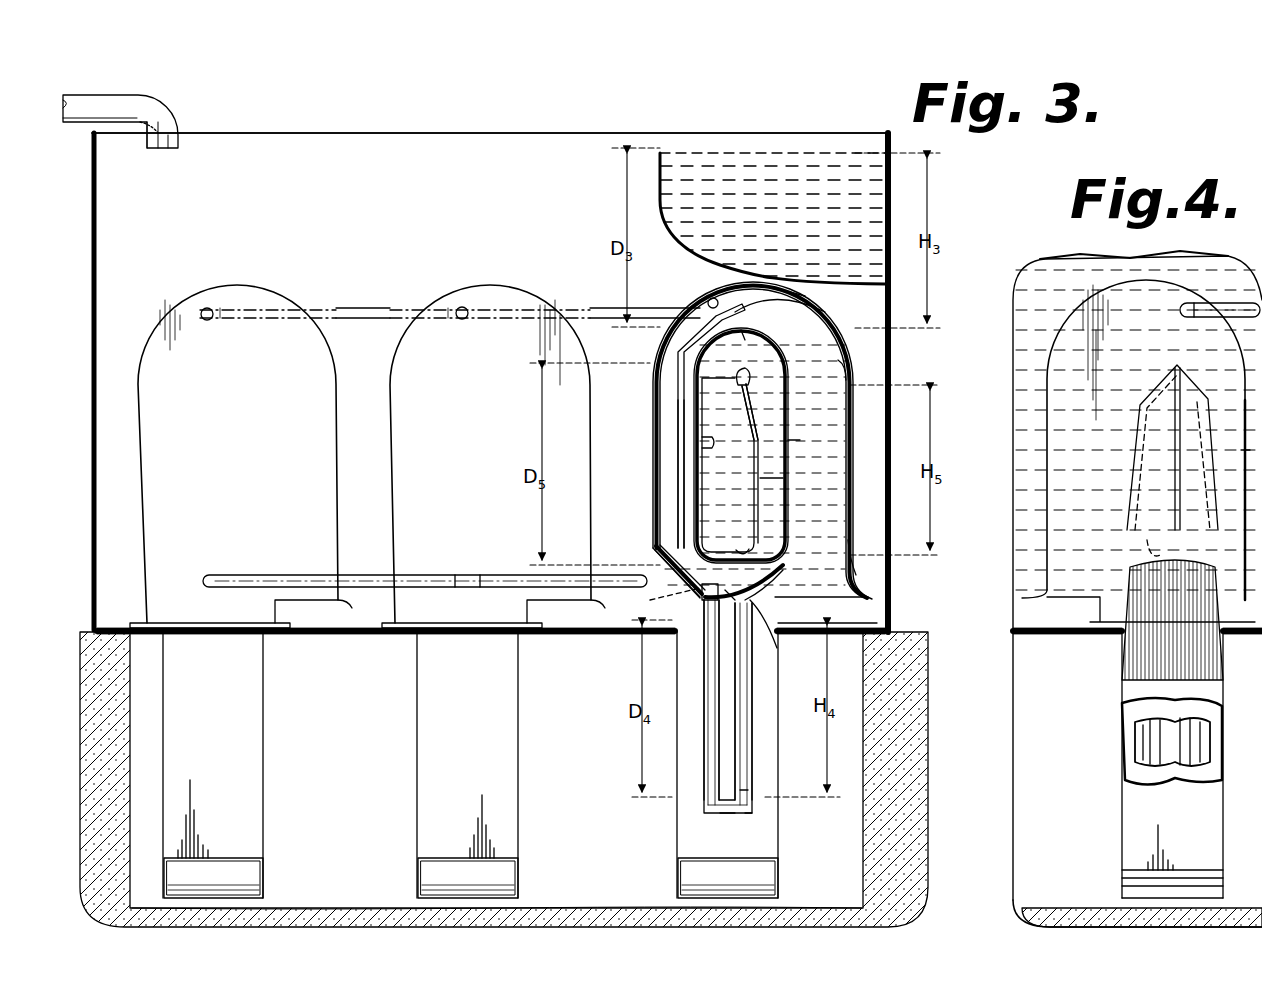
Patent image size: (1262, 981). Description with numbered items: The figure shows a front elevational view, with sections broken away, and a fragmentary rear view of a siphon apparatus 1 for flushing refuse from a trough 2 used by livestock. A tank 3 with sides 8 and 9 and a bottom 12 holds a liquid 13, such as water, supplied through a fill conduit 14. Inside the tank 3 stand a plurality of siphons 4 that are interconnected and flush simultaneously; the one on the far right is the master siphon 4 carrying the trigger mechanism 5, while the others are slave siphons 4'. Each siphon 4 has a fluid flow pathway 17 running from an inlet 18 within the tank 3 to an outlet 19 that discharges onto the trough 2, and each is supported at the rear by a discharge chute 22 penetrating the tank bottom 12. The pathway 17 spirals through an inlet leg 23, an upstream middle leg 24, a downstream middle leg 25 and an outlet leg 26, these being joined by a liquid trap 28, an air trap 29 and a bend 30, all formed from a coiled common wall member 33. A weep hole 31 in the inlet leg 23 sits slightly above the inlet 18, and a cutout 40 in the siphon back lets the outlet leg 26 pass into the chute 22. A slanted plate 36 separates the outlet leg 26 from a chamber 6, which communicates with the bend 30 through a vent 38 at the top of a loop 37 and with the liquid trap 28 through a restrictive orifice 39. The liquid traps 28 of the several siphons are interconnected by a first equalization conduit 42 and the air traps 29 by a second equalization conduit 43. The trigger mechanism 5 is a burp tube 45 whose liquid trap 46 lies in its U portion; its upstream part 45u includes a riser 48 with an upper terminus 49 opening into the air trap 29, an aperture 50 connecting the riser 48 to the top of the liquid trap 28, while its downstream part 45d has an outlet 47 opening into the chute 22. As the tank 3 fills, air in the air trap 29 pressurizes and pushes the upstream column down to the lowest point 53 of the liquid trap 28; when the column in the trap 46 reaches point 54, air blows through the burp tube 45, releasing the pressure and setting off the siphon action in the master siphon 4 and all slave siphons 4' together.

In FIG. 3, the siphon apparatus 1 is at (433, 128).
In FIG. 4, the siphon apparatus 1 is at (1240, 256).
In FIG. 3, the trough 2 is at (548, 908).
In FIG. 3, the tank 3 is at (338, 145).
In FIG. 4, the tank 3 is at (1018, 292).
In FIG. 4, the siphon 4 is at (1142, 441).
In FIG. 3, the slave siphon 4' is at (356, 454).
In FIG. 3, the trigger mechanism 5 is at (745, 790).
In FIG. 3, the chamber 6 is at (700, 440).
In FIG. 3, the side 8 is at (92, 283).
In FIG. 3, the side 9 is at (892, 365).
In FIG. 3, the bottom 12 is at (340, 633).
In FIG. 4, the bottom 12 is at (1137, 643).
In FIG. 3, the liquid 13 is at (838, 256).
In FIG. 4, the liquid 13 is at (1251, 450).
In FIG. 3, the fill conduit 14 is at (160, 112).
In FIG. 3, the fluid flow pathway 17 is at (780, 478).
In FIG. 3, the inlet 18 is at (325, 605).
In FIG. 4, the inlet 18 is at (1065, 625).
In FIG. 3, the outlet 19 is at (259, 878).
In FIG. 3, the discharge chute 22 is at (258, 665).
In FIG. 4, the discharge chute 22 is at (1124, 772).
In FIG. 3, the inlet leg 23 is at (835, 441).
In FIG. 3, the upstream middle leg 24 is at (665, 458).
In FIG. 3, the downstream middle leg 25 is at (783, 520).
In FIG. 3, the outlet leg 26 is at (684, 348).
In FIG. 3, the liquid trap 28 is at (775, 575).
In FIG. 3, the air trap 29 is at (713, 298).
In FIG. 3, the bend 30 is at (748, 340).
In FIG. 3, the weep hole 31 is at (853, 545).
In FIG. 3, the common wall member 33 is at (848, 374).
In FIG. 3, the slanted plate 36 is at (700, 380).
In FIG. 3, the loop 37 is at (738, 378).
In FIG. 3, the vent 38 is at (745, 370).
In FIG. 3, the restrictive orifice 39 is at (740, 553).
In FIG. 4, the cutout 40 is at (1137, 453).
In FIG. 3, the first equalization conduit 42 is at (437, 575).
In FIG. 3, the second equalization conduit 43 is at (372, 308).
In FIG. 4, the second equalization conduit 43 is at (1220, 310).
In FIG. 3, the burp tube 45 is at (752, 745).
In FIG. 3, the upstream part of conduit 45u is at (704, 680).
In FIG. 4, the upstream part of conduit 45u is at (1190, 738).
In FIG. 3, the downstream part of conduit 45d is at (752, 684).
In FIG. 4, the downstream part of conduit 45d is at (1148, 738).
In FIG. 3, the liquid trap 46 is at (730, 815).
In FIG. 3, the outlet 47 is at (777, 648).
In FIG. 3, the riser 48 is at (679, 498).
In FIG. 3, the upper terminus 49 is at (790, 294).
In FIG. 3, the aperture 50 is at (658, 552).
In FIG. 3, the lowest point 53 is at (745, 603).
In FIG. 3, the point 54 is at (750, 820).